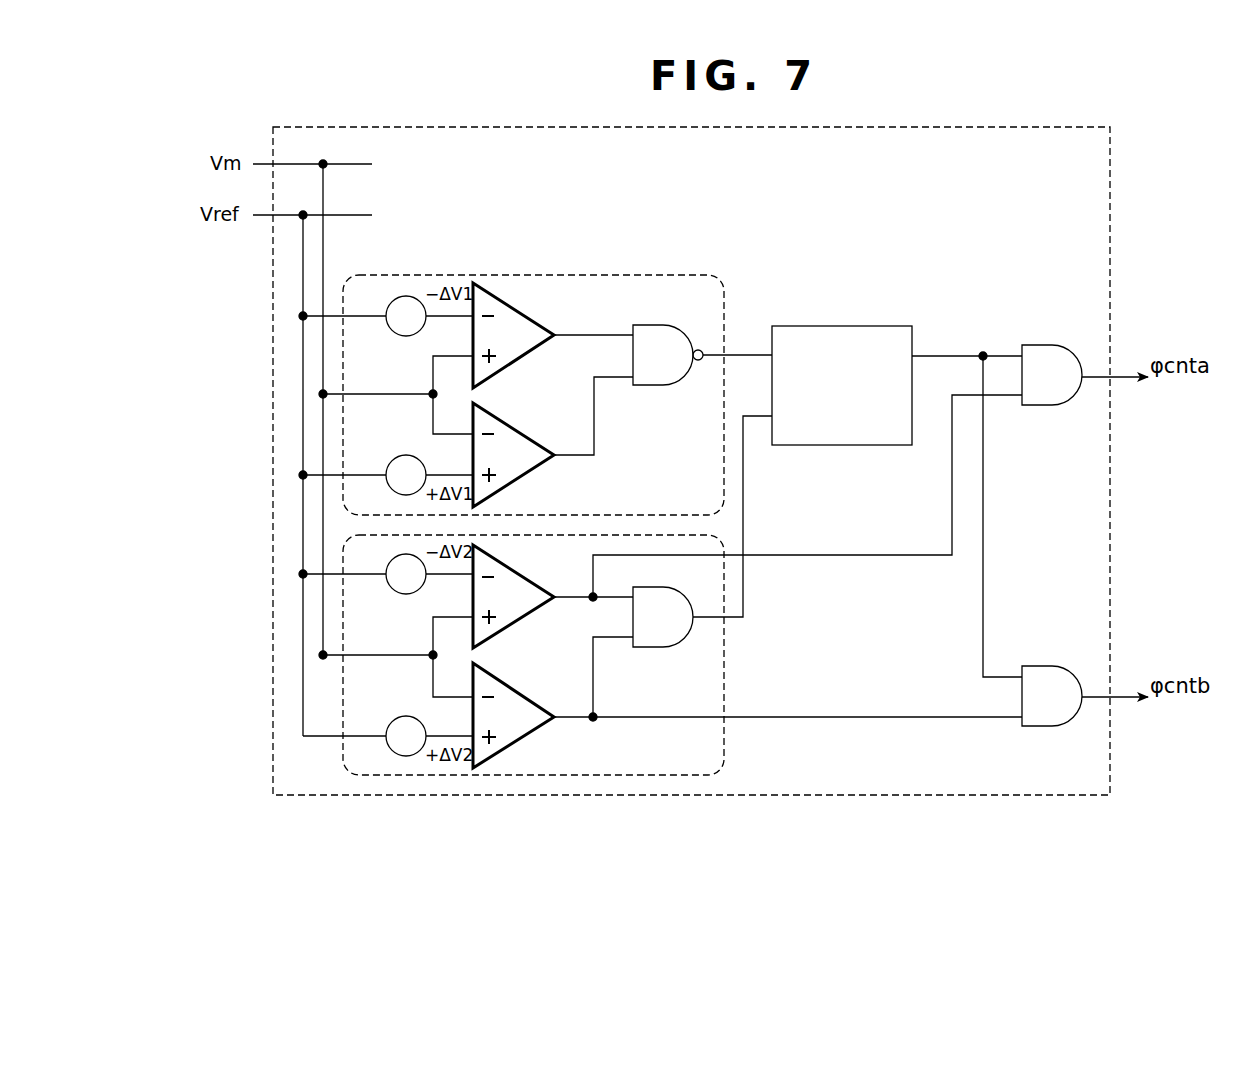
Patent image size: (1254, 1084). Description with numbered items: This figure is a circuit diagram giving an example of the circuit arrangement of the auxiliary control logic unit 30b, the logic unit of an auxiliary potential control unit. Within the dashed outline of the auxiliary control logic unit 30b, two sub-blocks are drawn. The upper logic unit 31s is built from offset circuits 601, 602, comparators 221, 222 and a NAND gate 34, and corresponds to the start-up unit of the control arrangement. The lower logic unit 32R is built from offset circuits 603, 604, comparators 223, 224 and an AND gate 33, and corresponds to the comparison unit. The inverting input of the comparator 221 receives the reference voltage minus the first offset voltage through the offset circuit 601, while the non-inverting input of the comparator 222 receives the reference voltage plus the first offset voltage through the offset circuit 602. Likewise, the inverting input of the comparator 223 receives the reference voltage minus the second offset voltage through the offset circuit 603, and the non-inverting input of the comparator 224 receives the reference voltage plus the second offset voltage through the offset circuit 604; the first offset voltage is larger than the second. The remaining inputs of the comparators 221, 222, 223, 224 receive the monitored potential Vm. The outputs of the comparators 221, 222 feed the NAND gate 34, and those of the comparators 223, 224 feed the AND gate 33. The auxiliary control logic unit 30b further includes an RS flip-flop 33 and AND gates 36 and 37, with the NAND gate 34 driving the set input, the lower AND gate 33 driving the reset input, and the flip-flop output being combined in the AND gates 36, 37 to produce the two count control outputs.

The auxiliary control logic unit 30b is at (1037, 127).
The logic unit 31s is at (673, 275).
The logic unit 32R is at (724, 637).
The offset circuit 601 is at (400, 336).
The offset circuit 602 is at (402, 455).
The offset circuit 603 is at (400, 594).
The offset circuit 604 is at (402, 716).
The comparator 221 is at (520, 365).
The comparator 222 is at (530, 478).
The comparator 223 is at (523, 624).
The comparator 224 is at (523, 742).
The NAND gate 34 is at (655, 386).
The AND gate / RS-FF 33 is at (840, 325).
The AND gate 36 is at (1047, 345).
The AND gate 37 is at (1047, 666).